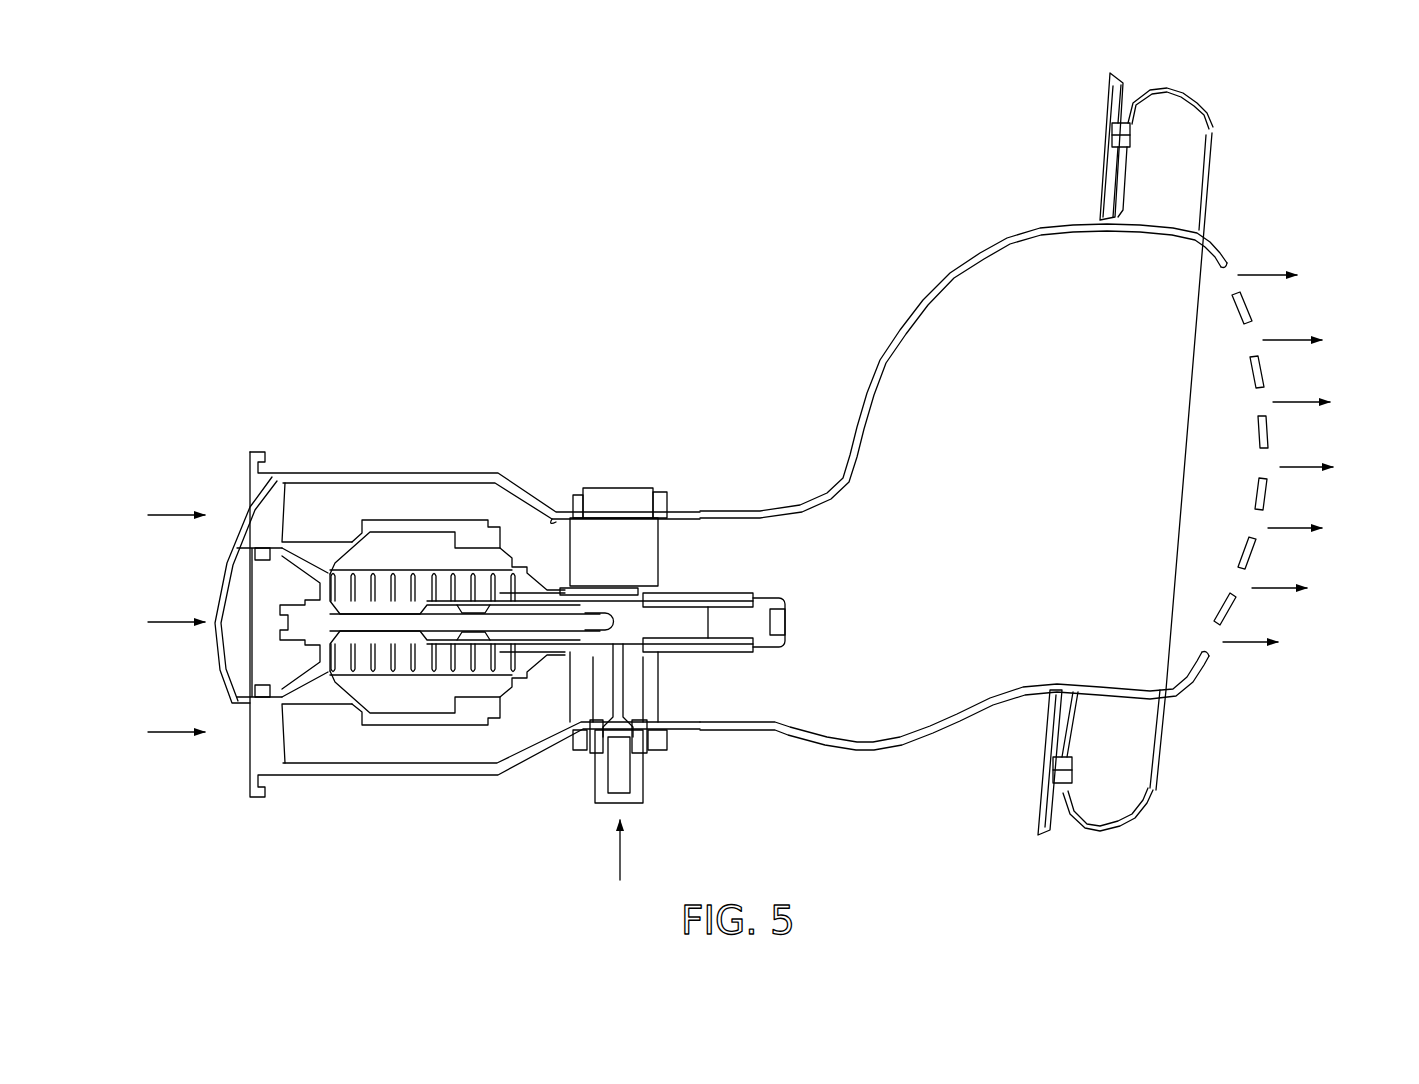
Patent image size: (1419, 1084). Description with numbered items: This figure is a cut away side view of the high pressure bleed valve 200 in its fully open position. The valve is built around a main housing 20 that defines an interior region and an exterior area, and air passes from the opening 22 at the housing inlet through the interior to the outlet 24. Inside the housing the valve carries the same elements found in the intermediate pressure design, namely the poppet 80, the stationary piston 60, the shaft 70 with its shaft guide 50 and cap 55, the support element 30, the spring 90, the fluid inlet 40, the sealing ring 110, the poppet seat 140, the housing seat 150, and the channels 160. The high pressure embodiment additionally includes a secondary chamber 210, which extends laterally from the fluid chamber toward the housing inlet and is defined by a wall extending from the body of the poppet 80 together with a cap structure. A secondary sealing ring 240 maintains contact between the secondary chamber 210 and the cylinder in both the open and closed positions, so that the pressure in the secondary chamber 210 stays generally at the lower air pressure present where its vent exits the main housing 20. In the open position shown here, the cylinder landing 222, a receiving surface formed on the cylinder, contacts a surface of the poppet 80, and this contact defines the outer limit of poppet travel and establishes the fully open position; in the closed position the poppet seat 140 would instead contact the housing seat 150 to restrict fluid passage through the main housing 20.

The high pressure bleed valve 200 is at (290, 305).
The opening 22 is at (185, 567).
The outlet 24 is at (1312, 433).
The main housing 20 is at (347, 777).
The secondary chamber 210 is at (260, 648).
The secondary sealing ring 240 is at (265, 695).
The cylinder landing 222 is at (358, 533).
The sealing ring 110 is at (458, 537).
The poppet 80 is at (437, 520).
The spring 90 is at (417, 680).
The poppet seat 140 is at (492, 518).
The channels 160 is at (565, 610).
The housing seat 150 is at (556, 518).
The shaft 70 is at (572, 615).
The shaft guide 50 is at (702, 593).
The cap 55 is at (787, 620).
The support element 30 is at (640, 693).
The fluid inlet 40 is at (617, 683).
The stationary piston 60 is at (540, 733).